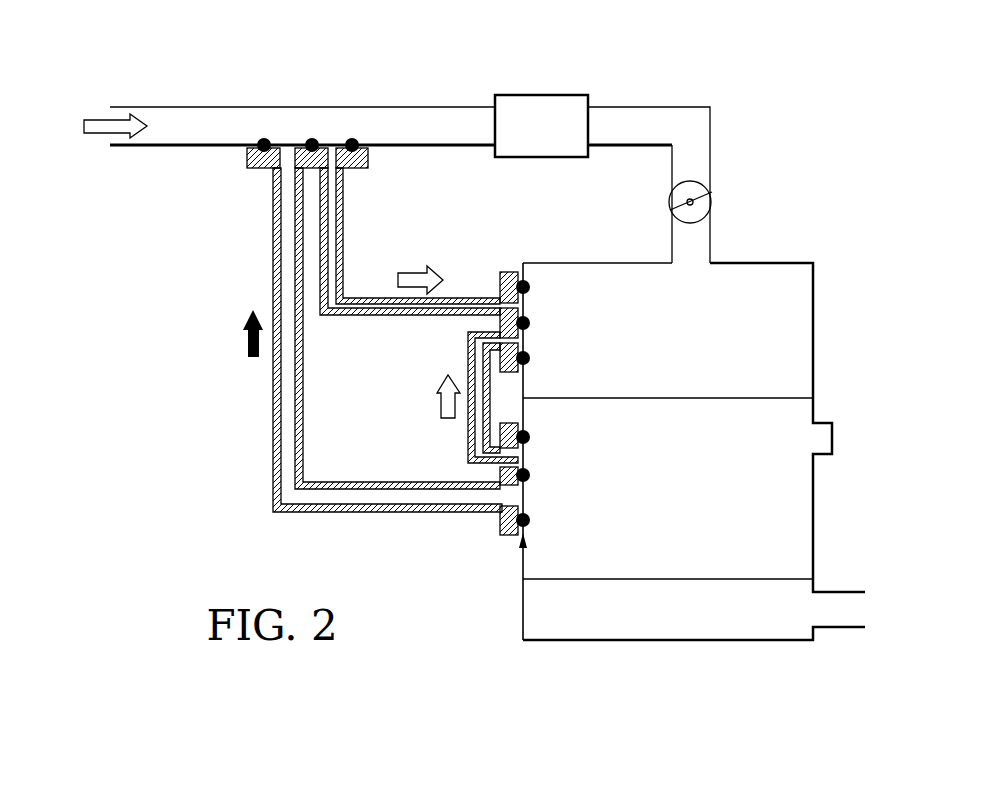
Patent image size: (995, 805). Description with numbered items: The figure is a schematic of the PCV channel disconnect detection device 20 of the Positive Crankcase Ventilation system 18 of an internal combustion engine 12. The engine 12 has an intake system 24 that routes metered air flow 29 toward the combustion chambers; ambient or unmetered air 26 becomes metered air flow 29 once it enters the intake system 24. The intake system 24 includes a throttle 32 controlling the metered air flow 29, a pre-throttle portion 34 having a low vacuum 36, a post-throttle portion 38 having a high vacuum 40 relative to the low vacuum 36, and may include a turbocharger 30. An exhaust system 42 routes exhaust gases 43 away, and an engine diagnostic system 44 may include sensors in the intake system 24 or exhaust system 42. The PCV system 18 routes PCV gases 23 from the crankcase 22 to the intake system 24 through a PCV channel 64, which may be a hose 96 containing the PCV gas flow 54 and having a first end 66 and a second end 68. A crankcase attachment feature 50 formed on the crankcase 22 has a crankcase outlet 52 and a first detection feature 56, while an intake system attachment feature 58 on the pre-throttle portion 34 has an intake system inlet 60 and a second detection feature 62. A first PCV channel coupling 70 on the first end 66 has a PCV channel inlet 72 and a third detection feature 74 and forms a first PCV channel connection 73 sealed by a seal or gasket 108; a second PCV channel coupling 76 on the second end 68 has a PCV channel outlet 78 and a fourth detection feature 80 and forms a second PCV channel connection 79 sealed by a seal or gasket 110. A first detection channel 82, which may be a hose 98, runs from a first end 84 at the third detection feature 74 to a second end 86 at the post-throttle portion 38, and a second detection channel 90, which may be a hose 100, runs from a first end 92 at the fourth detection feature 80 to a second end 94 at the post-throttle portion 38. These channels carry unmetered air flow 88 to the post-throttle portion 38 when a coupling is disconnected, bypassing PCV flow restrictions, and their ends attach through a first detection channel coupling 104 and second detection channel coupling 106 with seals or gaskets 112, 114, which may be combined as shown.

The internal combustion engine 12 is at (712, 53).
The Positive Crankcase Ventilation (PCV) system 18 is at (113, 240).
The PCV channel disconnect detection device 20 is at (160, 305).
The crankcase 22 is at (798, 505).
The PCV gases 23 is at (663, 488).
The intake system 24 is at (480, 85).
The unmetered air 26 is at (106, 193).
The metered air flow 29 is at (103, 120).
The turbocharger 30 is at (540, 95).
The throttle 32 is at (711, 200).
The pre-throttle portion 34 is at (430, 118).
The low vacuum 36 is at (159, 140).
The post-throttle portion 38 is at (797, 327).
The high vacuum 40 is at (661, 351).
The exhaust system 42 is at (525, 615).
The exhaust gases 43 is at (658, 623).
The engine diagnostic system 44 is at (835, 440).
The crankcase attachment feature 50 is at (527, 468).
The crankcase outlet 52 is at (527, 497).
The PCV gas flow 54 is at (243, 345).
The first detection feature 56 is at (530, 457).
The intake system attachment feature 58 is at (247, 147).
The intake system inlet 60 is at (288, 245).
The second detection feature 62 is at (331, 160).
The PCV channel 64 is at (288, 390).
The first end 66 is at (508, 510).
The second end 68 is at (273, 172).
The first PCV channel coupling 70 is at (502, 433).
The PCV channel inlet 72 is at (503, 498).
The first PCV channel connection 73 is at (520, 548).
The third detection feature 74 is at (502, 495).
The second PCV channel coupling 76 is at (370, 160).
The PCV channel outlet 78 is at (273, 240).
The second PCV channel connection 79 is at (245, 148).
The fourth detection feature 80 is at (343, 170).
The first detection channel 82 is at (475, 405).
The first end 84 is at (502, 480).
The second end 86 is at (500, 325).
The unmetered air flow 88 is at (415, 268).
The second detection channel 90 is at (358, 310).
The first end 92 is at (345, 198).
The second end 94 is at (500, 298).
The hose 96 is at (273, 473).
The hose 98 is at (467, 345).
The hose 100 is at (375, 263).
The first detection channel coupling 104 is at (515, 373).
The second detection channel coupling 106 is at (510, 272).
The seal or gasket 108 is at (531, 438).
The seal or gasket 110 is at (262, 138).
The seal or gasket 112 is at (531, 358).
The seal or gasket 114 is at (531, 287).